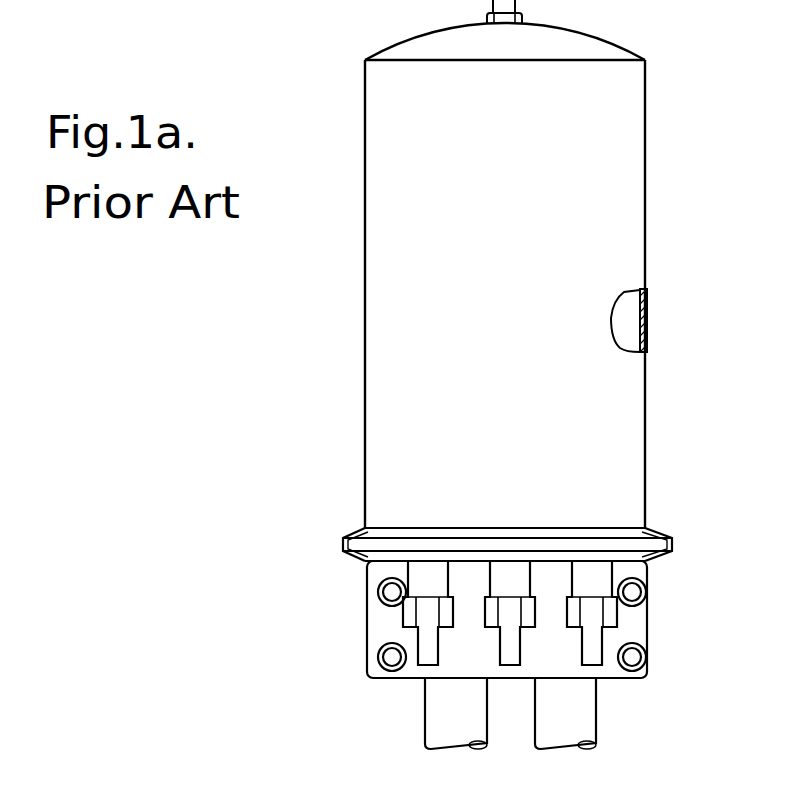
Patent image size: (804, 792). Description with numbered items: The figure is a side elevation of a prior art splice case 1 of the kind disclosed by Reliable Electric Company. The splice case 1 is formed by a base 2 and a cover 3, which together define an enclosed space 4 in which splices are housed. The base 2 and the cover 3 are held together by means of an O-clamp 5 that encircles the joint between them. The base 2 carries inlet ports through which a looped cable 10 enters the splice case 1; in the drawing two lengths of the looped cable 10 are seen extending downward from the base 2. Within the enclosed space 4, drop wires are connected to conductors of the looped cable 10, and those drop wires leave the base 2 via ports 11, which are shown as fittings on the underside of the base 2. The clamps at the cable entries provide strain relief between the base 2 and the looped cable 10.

The splice case 1 is at (519, 391).
The base 2 is at (640, 627).
The cover 3 is at (390, 383).
The enclosed space 4 is at (626, 325).
The O-clamp 5 is at (676, 543).
The looped cable 10 is at (547, 705).
The ports 11 is at (507, 645).